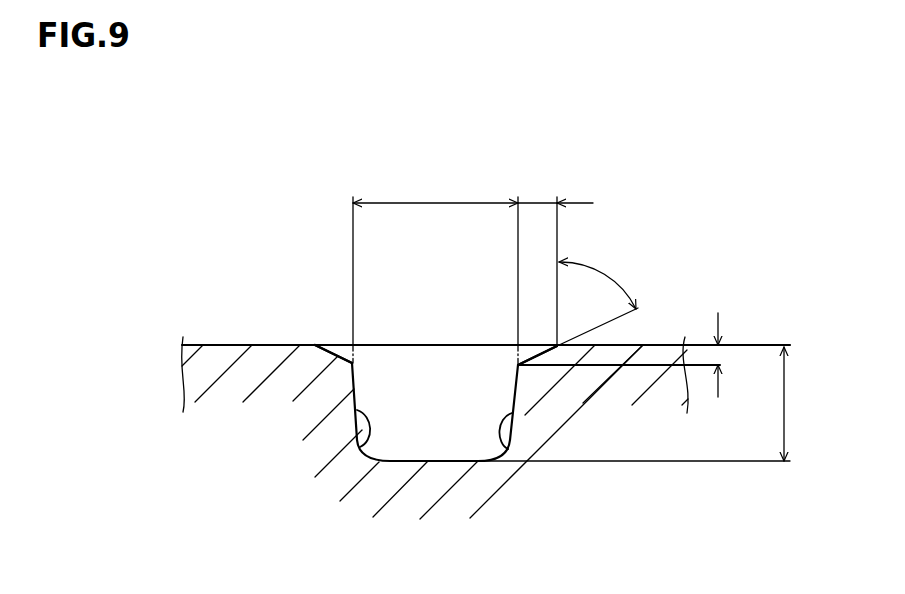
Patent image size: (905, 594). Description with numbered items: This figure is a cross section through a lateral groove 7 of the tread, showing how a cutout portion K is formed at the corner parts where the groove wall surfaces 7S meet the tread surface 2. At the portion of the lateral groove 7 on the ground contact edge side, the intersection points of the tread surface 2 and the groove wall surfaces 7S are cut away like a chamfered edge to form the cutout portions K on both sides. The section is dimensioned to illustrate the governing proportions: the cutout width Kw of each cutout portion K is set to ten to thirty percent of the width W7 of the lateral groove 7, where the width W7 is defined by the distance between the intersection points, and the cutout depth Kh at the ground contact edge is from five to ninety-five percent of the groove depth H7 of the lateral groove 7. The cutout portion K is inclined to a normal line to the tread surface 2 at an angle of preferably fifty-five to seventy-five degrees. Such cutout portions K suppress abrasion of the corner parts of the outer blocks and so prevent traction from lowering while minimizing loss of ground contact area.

The tread surface 2 is at (220, 345).
The lateral groove 7 is at (449, 407).
The groove wall surface 7S is at (361, 447).
The cutout portion K is at (335, 354).
The width of the lateral groove W7 is at (435, 257).
The cutout width Kw is at (554, 257).
The cutout depth Kh is at (740, 355).
The groove depth of the lateral groove H7 is at (806, 404).